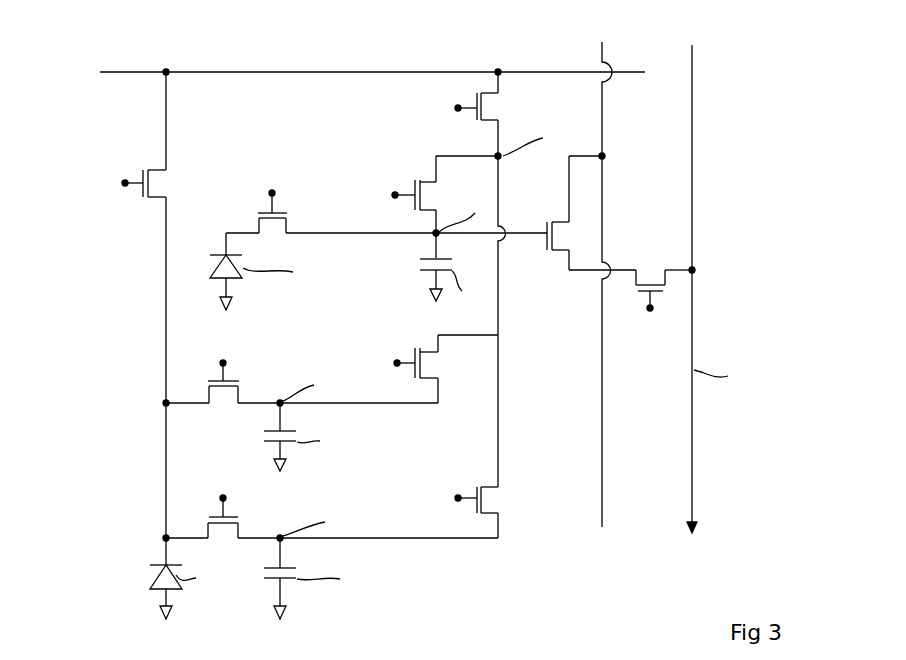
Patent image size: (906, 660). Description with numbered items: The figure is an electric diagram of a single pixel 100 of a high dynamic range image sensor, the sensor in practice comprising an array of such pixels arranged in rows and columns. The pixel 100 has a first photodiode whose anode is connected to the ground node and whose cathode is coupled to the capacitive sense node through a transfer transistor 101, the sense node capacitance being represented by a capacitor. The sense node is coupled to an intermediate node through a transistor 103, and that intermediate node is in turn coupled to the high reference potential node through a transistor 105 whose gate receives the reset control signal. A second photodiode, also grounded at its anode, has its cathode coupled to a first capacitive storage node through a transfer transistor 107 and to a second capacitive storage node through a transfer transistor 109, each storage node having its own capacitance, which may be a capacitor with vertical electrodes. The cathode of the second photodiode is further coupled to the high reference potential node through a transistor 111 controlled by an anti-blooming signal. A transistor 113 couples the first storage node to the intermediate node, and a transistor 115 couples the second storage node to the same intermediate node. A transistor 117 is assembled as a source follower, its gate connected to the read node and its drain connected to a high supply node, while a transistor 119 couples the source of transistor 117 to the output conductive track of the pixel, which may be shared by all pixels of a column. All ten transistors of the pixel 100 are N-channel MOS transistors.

The pixel 100 is at (276, 31).
The transfer transistor 101 is at (258, 213).
The transistor 103 is at (413, 183).
The transistor 105 is at (486, 110).
The transfer transistor 107 is at (240, 393).
The transfer transistor 109 is at (240, 532).
The transistor 111 is at (148, 203).
The transistor 113 is at (428, 347).
The transistor 115 is at (490, 486).
The transistor 117 is at (560, 253).
The transistor 119 is at (640, 268).